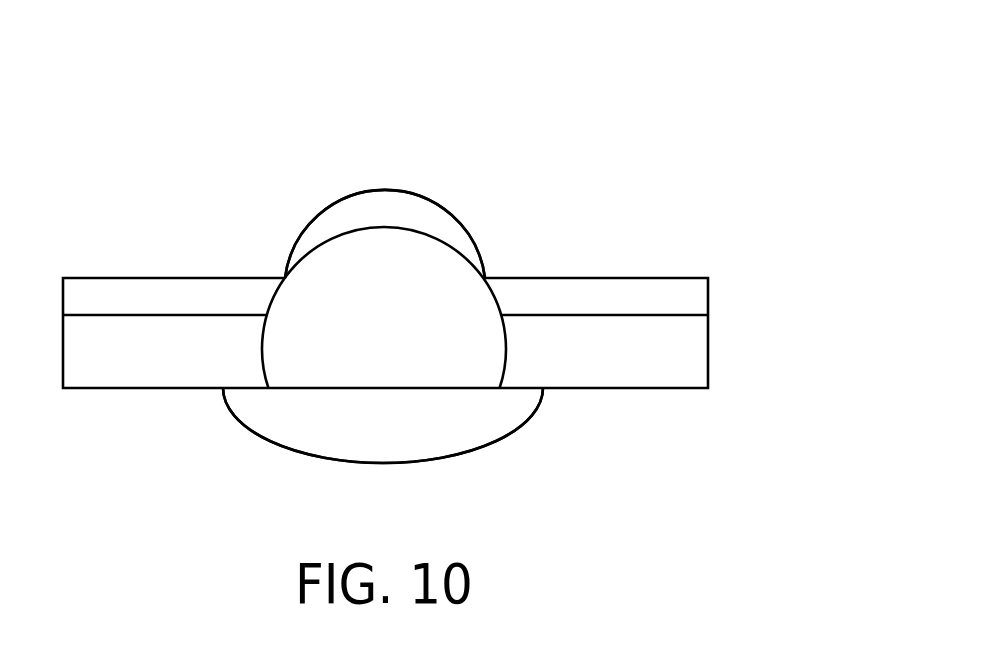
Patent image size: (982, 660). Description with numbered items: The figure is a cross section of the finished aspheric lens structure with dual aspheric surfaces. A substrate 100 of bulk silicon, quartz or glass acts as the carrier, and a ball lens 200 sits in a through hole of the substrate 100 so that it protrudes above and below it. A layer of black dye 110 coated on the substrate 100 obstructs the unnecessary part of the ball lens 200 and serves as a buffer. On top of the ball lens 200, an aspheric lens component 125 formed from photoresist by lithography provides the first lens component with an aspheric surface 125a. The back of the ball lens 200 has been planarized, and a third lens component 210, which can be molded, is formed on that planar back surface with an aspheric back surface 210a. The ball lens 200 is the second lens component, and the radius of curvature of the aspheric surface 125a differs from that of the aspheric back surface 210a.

The substrate 100 is at (683, 353).
The black dye layer 110 is at (683, 295).
The ball lens 200 is at (345, 297).
The aspheric lens component 125 is at (448, 230).
The aspheric surface 125a is at (388, 190).
The third lens component 210 is at (495, 422).
The aspheric back surface 210a is at (340, 460).